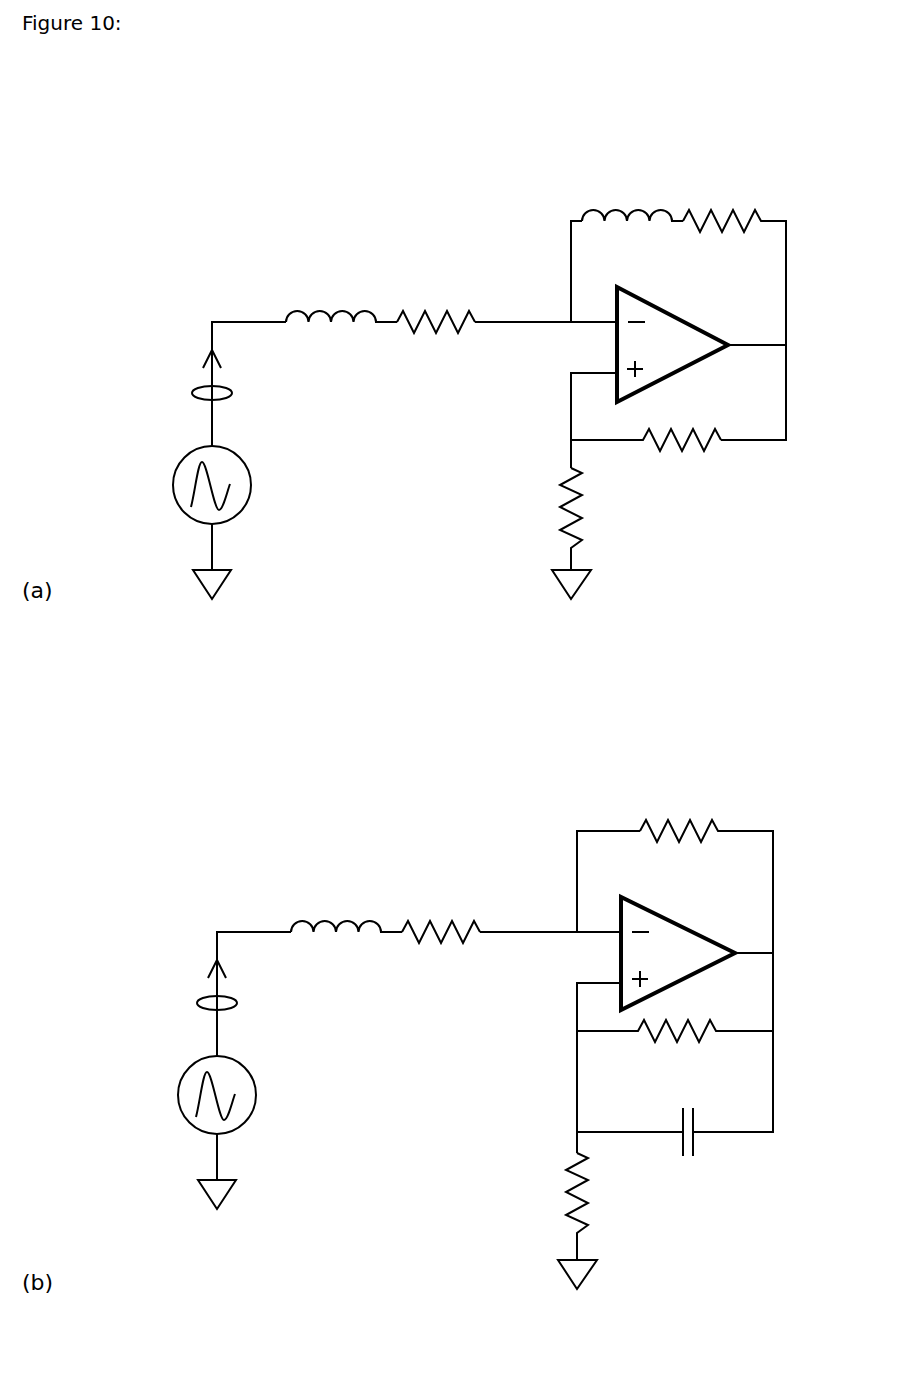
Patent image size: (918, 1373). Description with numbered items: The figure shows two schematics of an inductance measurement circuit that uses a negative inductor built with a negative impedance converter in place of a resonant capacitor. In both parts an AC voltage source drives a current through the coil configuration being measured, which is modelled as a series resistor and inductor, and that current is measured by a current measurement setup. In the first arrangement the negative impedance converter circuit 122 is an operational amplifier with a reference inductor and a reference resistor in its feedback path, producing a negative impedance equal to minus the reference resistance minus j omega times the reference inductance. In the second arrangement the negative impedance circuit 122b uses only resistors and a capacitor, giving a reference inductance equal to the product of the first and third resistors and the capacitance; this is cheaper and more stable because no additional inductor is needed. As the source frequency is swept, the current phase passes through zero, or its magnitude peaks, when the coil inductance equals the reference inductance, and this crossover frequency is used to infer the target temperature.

The negative impedance converter circuit 122 is at (551, 153).
The negative impedance circuit 122b is at (557, 763).